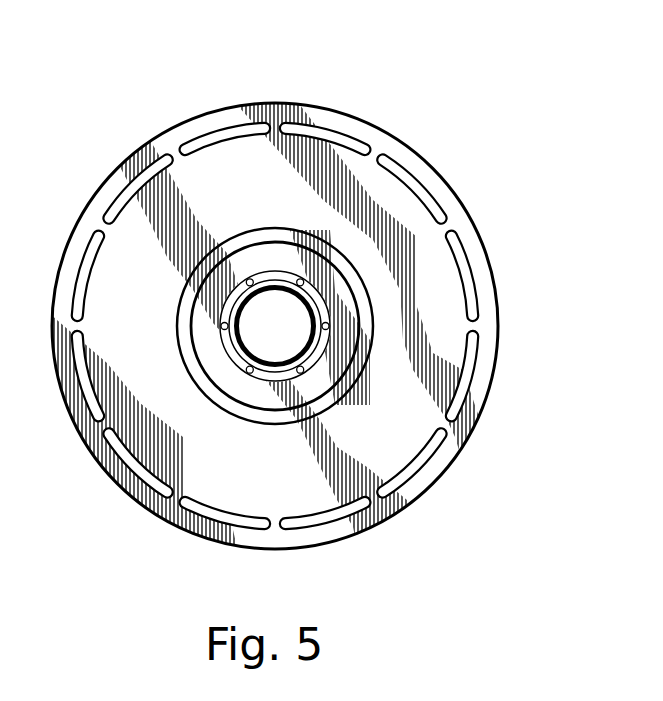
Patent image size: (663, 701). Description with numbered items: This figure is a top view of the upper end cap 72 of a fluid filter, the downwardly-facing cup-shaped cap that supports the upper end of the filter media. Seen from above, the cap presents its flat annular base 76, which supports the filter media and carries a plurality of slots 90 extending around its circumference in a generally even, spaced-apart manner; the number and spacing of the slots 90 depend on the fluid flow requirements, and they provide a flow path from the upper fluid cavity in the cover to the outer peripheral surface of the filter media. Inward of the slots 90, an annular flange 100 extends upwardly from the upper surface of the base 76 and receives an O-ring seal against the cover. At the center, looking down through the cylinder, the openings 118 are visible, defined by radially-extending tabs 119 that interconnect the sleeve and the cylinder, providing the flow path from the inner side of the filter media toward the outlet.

The upper end cap 72 is at (440, 482).
The flat annular base 76 is at (440, 350).
The slots 90 is at (160, 517).
The annular flange 100 is at (336, 258).
The openings 118 is at (300, 374).
The radially-extending tabs 119 is at (300, 280).